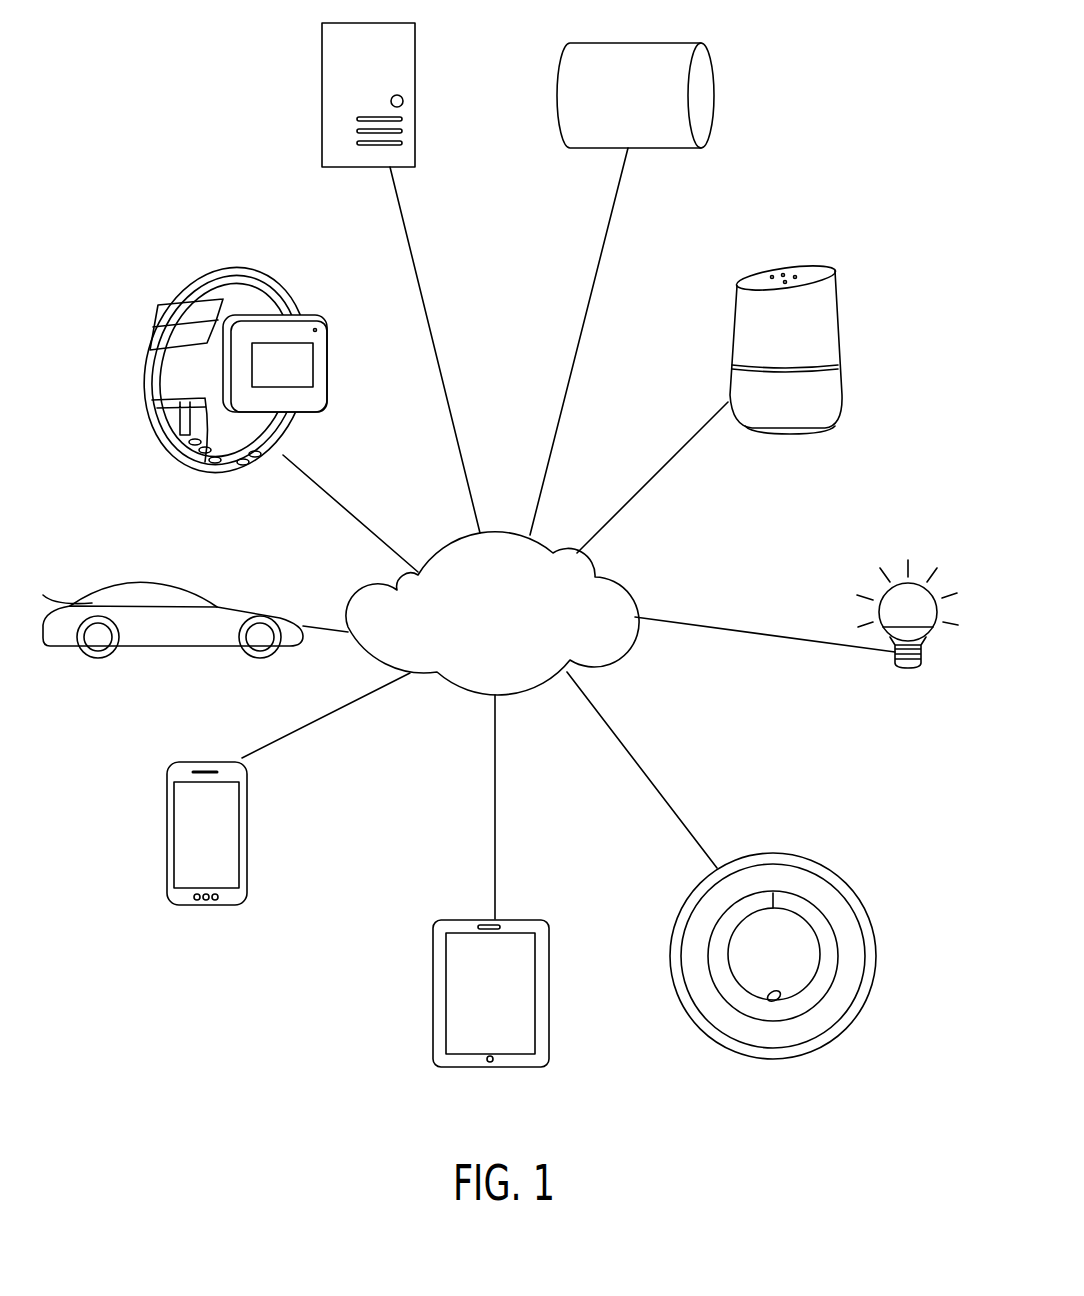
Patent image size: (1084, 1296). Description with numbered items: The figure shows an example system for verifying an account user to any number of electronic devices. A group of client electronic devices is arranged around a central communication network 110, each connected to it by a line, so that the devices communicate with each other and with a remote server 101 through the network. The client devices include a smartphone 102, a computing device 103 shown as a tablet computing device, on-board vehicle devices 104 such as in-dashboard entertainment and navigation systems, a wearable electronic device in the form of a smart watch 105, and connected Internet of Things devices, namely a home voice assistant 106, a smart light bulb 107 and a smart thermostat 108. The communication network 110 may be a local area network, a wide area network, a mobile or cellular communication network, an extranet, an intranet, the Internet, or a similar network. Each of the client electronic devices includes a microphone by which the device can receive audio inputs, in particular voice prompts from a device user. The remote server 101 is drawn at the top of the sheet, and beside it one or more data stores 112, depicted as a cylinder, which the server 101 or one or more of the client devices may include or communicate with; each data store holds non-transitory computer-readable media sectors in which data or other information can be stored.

The remote server 101 is at (415, 136).
The smartphone 102 is at (167, 853).
The computing device 103 is at (433, 960).
The on-board vehicle devices 104 is at (200, 647).
The smart watch 105 is at (203, 268).
The home voice assistant 106 is at (788, 430).
The smart light bulb 107 is at (905, 667).
The smart thermostat 108 is at (682, 910).
The communication network 110 is at (418, 677).
The data stores 112 is at (677, 150).